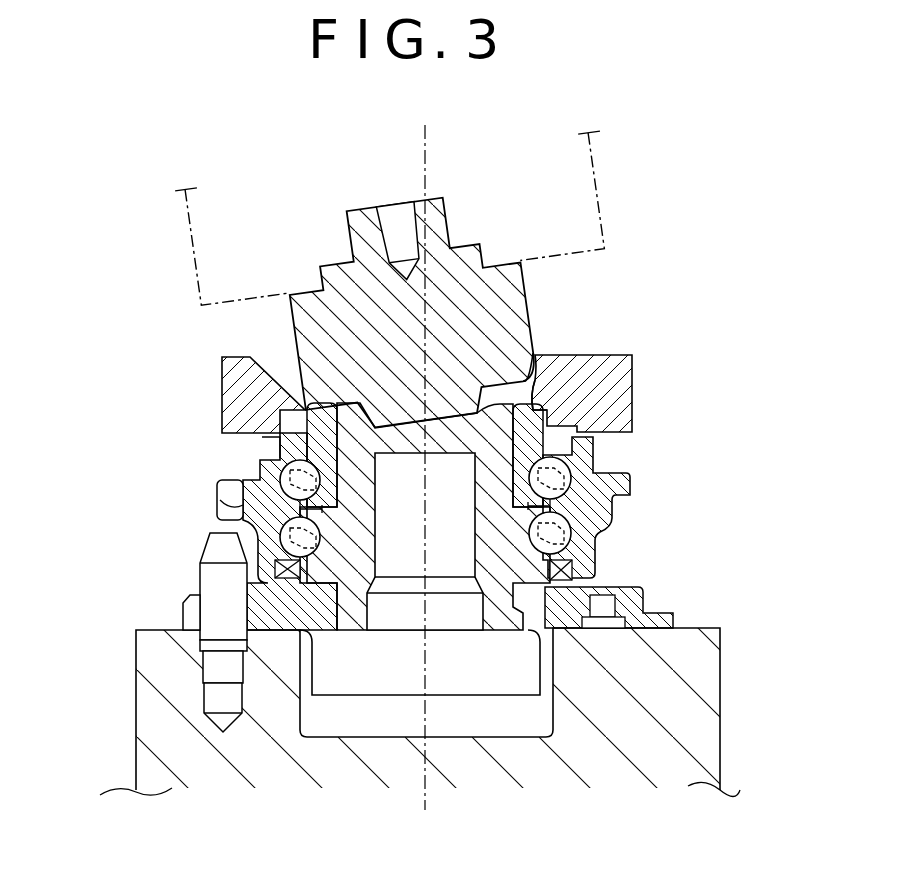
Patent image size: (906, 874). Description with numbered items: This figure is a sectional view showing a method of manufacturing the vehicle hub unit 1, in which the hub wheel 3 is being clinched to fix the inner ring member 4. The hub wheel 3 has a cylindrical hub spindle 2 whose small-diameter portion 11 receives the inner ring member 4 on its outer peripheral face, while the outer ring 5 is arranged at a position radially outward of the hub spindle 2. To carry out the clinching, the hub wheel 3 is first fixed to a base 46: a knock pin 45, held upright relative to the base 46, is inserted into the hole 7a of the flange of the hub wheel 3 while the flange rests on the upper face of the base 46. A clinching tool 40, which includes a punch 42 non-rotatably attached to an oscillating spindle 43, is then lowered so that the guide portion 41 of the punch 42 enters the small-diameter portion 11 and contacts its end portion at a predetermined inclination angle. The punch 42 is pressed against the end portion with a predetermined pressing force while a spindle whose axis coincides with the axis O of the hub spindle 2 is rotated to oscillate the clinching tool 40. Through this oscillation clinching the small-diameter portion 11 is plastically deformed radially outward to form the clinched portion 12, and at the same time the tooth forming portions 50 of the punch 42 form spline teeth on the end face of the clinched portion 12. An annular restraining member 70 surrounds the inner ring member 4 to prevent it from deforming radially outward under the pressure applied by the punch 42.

The vehicle hub unit 1 is at (641, 548).
The hub spindle 2 is at (327, 598).
The hub wheel 3 is at (196, 531).
The inner ring member 4 is at (547, 470).
The outer ring 5 is at (227, 497).
The hole 7a is at (187, 613).
The small-diameter portion 11 is at (350, 450).
The clinched portion 12 is at (308, 400).
The clinching tool 40 is at (163, 243).
The guide portion 41 is at (547, 387).
The punch 42 is at (510, 293).
The oscillating spindle 43 is at (603, 188).
The knock pin 45 is at (213, 582).
The base 46 is at (150, 688).
The tooth forming portions 50 is at (533, 387).
The restraining member 70 is at (633, 400).
The axis O is at (427, 806).